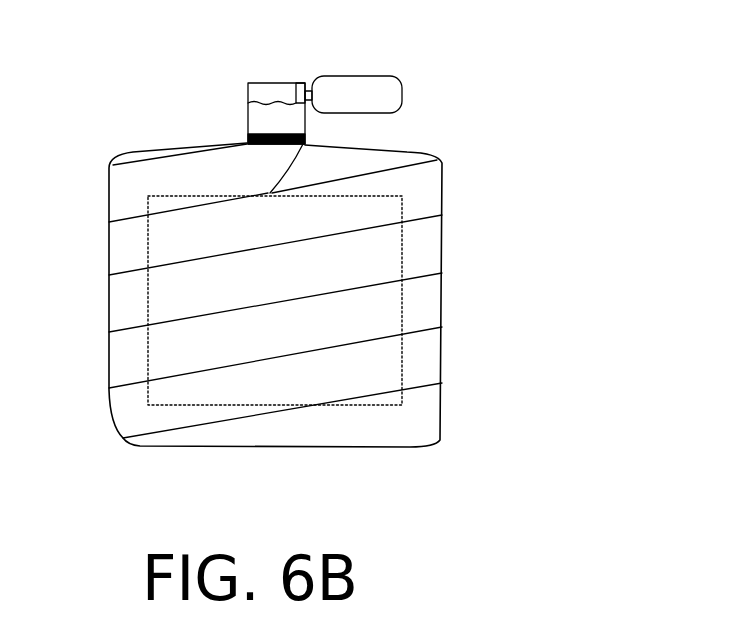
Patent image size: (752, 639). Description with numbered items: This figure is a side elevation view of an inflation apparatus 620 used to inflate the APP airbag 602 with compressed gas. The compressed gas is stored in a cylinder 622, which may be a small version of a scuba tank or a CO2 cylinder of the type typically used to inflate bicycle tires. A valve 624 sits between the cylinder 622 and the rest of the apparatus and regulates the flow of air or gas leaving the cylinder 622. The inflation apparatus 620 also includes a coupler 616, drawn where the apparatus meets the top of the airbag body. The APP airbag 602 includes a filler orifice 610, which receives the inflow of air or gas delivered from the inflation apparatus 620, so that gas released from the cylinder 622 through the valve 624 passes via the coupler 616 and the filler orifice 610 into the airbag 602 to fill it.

The APP airbag 602 is at (462, 173).
The filler orifice 610 is at (255, 103).
The coupler 616 is at (247, 137).
The inflation apparatus 620 is at (368, 79).
The cylinder 622 is at (397, 76).
The valve 624 is at (303, 83).